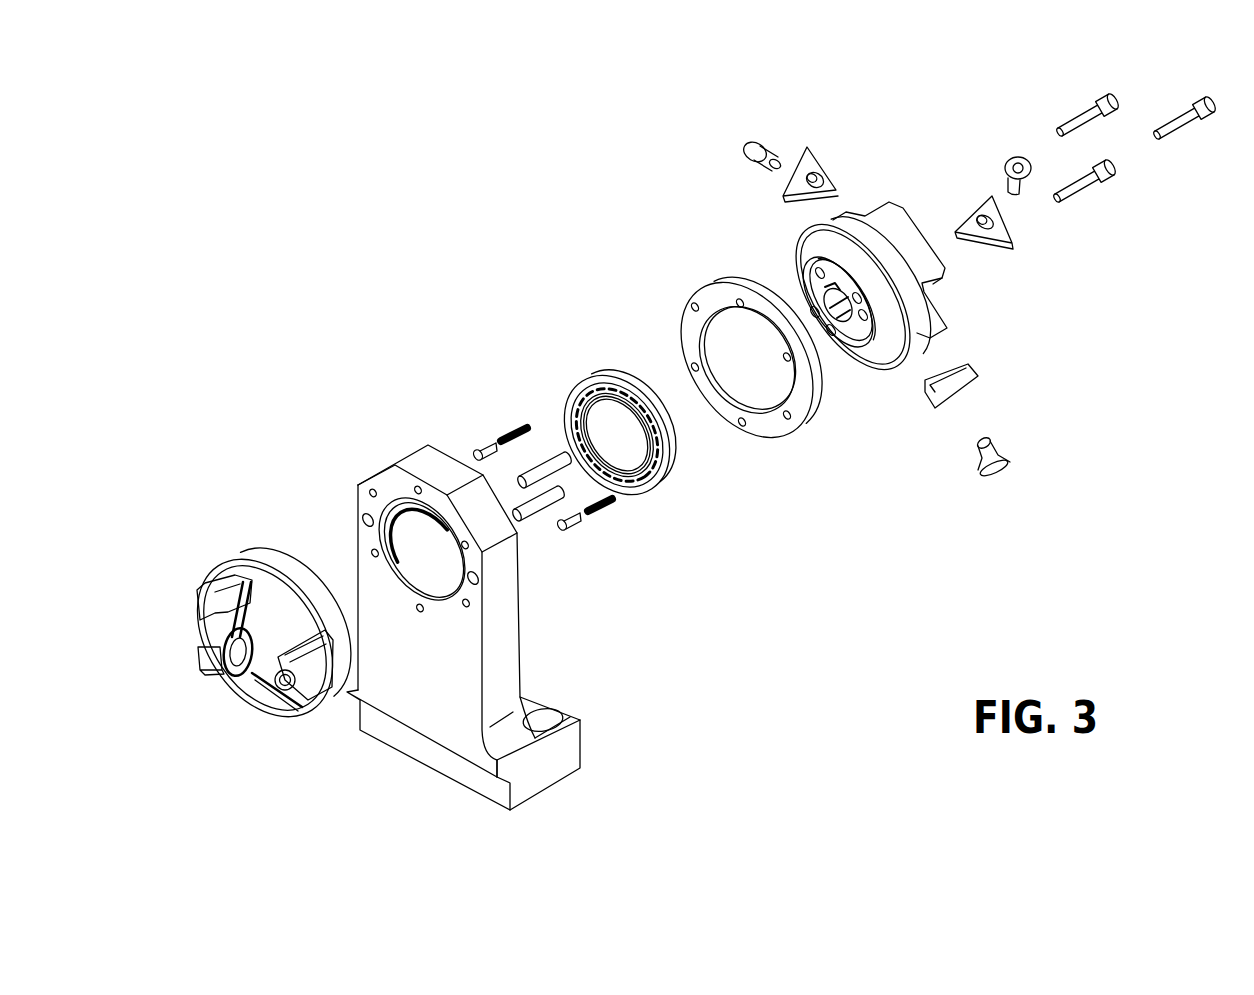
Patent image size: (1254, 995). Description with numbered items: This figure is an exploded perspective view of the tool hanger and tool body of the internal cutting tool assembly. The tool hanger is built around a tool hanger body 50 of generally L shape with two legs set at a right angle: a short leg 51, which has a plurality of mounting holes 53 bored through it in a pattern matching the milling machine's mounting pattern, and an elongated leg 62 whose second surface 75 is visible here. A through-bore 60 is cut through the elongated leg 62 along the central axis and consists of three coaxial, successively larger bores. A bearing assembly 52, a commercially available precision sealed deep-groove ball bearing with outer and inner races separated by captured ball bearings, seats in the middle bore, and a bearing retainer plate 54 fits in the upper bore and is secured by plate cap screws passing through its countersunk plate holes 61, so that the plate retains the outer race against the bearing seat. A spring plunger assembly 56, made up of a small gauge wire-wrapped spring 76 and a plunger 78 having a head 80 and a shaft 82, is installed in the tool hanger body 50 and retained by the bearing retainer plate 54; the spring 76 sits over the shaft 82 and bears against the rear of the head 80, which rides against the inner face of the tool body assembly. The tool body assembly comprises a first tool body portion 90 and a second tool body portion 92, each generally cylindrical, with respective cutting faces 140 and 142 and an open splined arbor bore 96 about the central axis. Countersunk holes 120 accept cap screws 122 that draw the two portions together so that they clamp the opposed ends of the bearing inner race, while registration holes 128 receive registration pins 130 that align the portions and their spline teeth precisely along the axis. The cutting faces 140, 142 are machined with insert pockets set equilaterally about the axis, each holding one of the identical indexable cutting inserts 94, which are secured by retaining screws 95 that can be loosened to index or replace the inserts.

The tool hanger body 50 is at (489, 601).
The short leg 51 is at (560, 788).
The bearing assembly 52 is at (675, 456).
The mounting holes 53 is at (577, 716).
The bearing retainer plate 54 is at (750, 348).
The spring plunger assembly 56 is at (488, 421).
The through-bore 60 is at (412, 500).
The countersunk plate holes 61 is at (737, 300).
The elongated leg 62 is at (355, 538).
The second surface 75 is at (422, 707).
The spring 76 is at (615, 506).
The plunger 78 is at (587, 588).
The head 80 is at (566, 532).
The shaft 82 is at (578, 520).
The first tool body portion 90 is at (871, 288).
The second tool body portion 92 is at (244, 591).
The cutting inserts 94 is at (783, 182).
The retaining screws 95 is at (745, 150).
The splined arbor bore 96 is at (818, 303).
The holes 120 is at (822, 265).
The cap screws 122 is at (1060, 118).
The registration holes 128 is at (815, 312).
The registration pins 130 is at (555, 447).
The cutting face 140 is at (915, 212).
The cutting face 142 is at (202, 617).